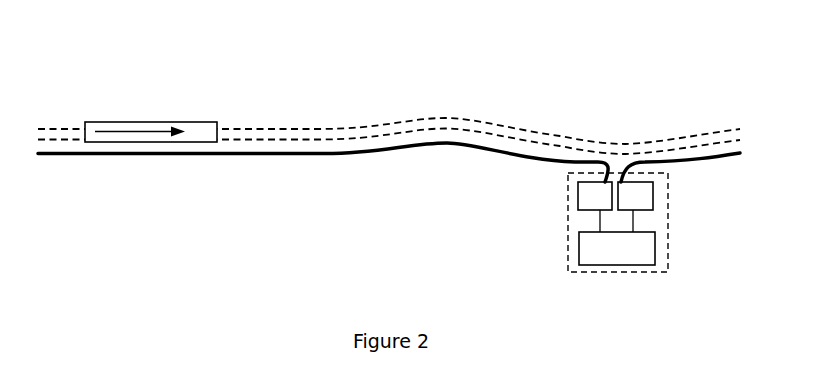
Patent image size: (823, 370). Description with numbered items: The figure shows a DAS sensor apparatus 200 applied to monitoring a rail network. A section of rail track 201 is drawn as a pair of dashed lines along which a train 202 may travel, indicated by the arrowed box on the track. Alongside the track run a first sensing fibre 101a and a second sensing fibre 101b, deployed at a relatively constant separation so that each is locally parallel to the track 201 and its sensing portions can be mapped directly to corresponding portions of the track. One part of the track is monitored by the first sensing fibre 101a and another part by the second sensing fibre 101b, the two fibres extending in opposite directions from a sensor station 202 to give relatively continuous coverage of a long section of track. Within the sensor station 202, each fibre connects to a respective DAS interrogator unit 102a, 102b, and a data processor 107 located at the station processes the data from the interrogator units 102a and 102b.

The DAS sensor apparatus 200 is at (329, 51).
The rail track 201 is at (452, 118).
The sensor station 202 is at (138, 121).
The first sensing fibre 101a is at (333, 154).
The second sensing fibre 101b is at (712, 158).
The first DAS interrogator unit 102a is at (578, 197).
The second DAS interrogator unit 102b is at (653, 198).
The data processor 107 is at (600, 257).